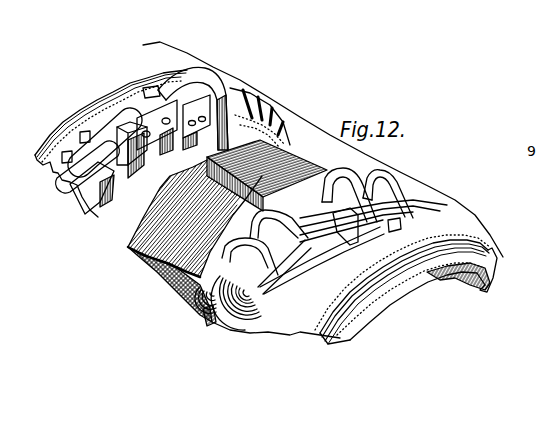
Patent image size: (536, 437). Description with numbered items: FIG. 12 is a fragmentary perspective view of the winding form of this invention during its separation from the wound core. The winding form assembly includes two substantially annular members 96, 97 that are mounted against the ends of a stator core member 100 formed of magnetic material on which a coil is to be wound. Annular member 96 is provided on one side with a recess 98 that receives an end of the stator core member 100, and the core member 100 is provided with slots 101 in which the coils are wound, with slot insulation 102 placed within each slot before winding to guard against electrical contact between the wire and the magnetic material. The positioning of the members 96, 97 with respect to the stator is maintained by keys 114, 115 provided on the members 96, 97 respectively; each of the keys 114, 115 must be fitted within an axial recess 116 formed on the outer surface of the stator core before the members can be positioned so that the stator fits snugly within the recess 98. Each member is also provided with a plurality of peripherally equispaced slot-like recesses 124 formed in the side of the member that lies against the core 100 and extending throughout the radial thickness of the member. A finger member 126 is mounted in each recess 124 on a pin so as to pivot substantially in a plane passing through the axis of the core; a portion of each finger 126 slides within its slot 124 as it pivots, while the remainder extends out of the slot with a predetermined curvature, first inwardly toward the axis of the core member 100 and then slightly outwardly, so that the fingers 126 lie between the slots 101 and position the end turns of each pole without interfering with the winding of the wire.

The annular member 96 is at (104, 97).
The annular member 97 is at (344, 289).
The recess 98 is at (117, 195).
The stator core member 100 is at (155, 276).
The slots 101 is at (203, 312).
The slot insulation 102 is at (195, 290).
The key 114 is at (157, 147).
The key 115 is at (354, 216).
The axial recess 116 is at (196, 162).
The slot-like recess 124 is at (150, 88).
The finger member 126 is at (200, 82).